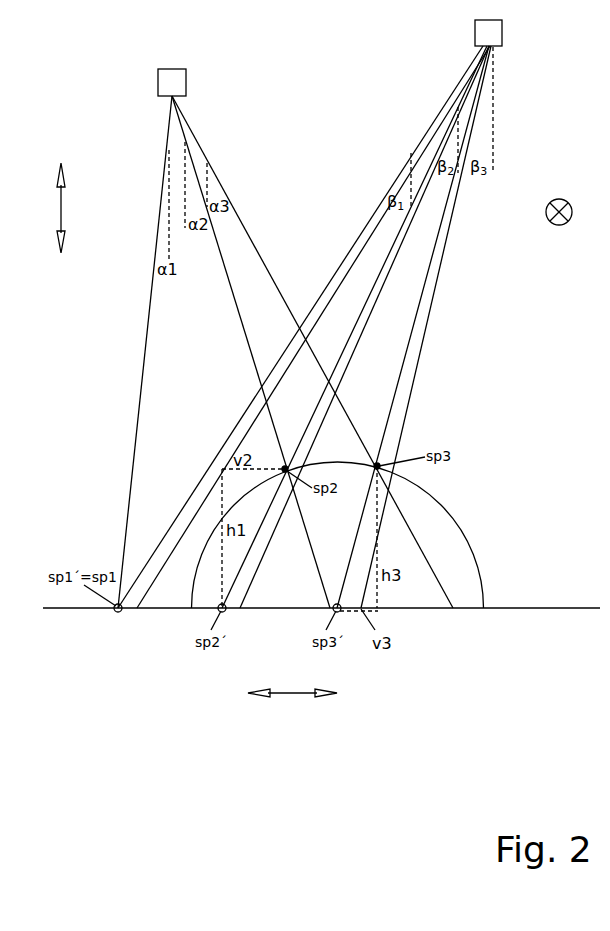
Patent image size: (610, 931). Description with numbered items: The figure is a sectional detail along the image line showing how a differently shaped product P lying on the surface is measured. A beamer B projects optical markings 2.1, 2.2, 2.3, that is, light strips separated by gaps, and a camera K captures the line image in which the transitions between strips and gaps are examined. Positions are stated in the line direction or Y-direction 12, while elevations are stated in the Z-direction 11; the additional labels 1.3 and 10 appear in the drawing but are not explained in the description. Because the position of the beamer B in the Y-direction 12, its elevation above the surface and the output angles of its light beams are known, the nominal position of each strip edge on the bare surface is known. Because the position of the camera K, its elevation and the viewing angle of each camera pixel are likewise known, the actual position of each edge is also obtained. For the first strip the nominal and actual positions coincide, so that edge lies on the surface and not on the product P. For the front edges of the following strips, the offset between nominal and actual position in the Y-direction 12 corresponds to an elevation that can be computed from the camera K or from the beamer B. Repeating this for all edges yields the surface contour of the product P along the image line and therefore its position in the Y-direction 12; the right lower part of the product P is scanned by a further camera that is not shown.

The first measurement point / camera beam 1.3 is at (143, 376).
The optical marking 2.1 is at (452, 89).
The optical marking 2.2 is at (474, 70).
The optical marking 2.3 is at (490, 72).
The x axis 10 is at (557, 225).
The Z-direction 11 is at (61, 210).
The line direction 12 is at (293, 694).
The camera K is at (172, 82).
The beamer B is at (488, 33).
The product P is at (475, 556).